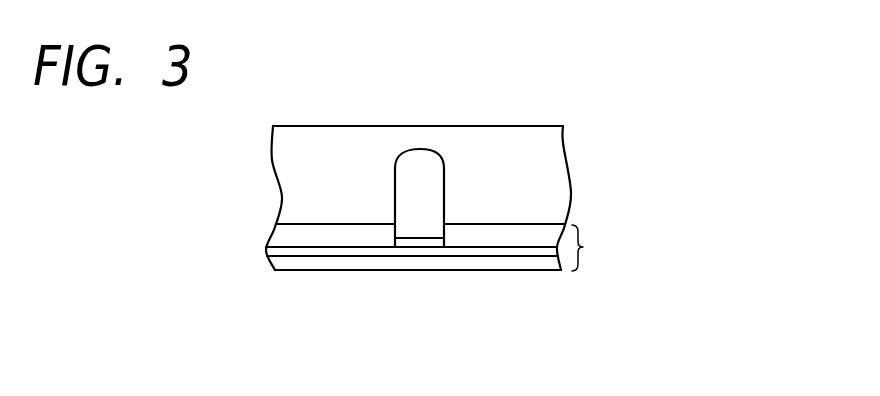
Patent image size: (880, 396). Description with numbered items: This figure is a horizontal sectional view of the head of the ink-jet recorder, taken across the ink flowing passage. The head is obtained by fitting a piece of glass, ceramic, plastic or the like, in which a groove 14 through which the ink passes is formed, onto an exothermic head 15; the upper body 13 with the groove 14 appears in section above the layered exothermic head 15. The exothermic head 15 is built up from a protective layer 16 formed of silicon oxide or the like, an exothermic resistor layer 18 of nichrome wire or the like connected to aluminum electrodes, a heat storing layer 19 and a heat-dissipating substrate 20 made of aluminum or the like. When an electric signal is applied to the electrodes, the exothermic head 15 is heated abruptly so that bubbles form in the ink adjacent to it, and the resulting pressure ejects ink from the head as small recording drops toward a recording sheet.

The substrate body 13 is at (323, 126).
The groove 14 is at (419, 149).
The exothermic head 15 is at (590, 248).
The protective layer 16 is at (349, 226).
The exothermic resistor layer 18 is at (422, 243).
The heat storing layer 19 is at (465, 254).
The heat-dissipating substrate 20 is at (517, 263).